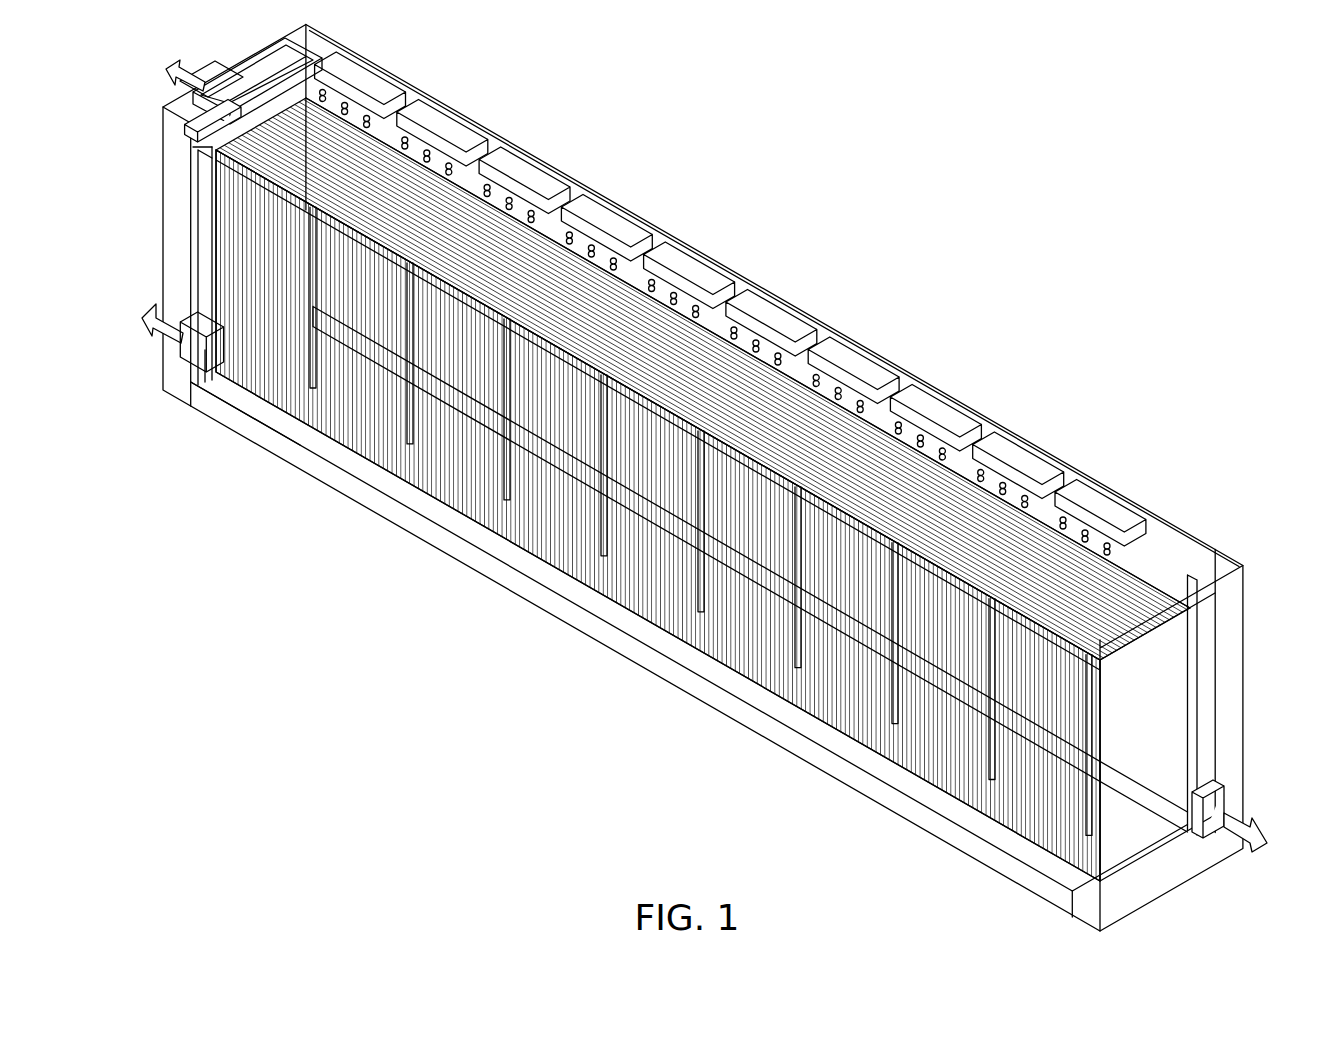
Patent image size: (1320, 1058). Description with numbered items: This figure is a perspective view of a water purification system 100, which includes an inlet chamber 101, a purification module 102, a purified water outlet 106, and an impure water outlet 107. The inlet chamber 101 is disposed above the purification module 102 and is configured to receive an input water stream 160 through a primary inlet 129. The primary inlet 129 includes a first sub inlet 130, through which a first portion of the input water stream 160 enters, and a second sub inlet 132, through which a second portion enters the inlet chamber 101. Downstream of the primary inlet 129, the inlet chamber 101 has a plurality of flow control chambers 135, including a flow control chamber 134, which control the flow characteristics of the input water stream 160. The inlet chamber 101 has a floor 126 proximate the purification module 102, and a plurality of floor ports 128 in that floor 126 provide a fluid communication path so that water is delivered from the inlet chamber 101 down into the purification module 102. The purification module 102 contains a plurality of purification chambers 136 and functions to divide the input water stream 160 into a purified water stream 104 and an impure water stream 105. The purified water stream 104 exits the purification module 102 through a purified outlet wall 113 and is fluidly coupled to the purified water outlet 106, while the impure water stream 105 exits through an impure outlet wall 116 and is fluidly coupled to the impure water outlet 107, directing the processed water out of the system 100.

The water purification system 100 is at (701, 471).
The inlet chamber 101 is at (404, 74).
The purification module 102 is at (363, 402).
The purified water stream 104 is at (150, 310).
The impure water stream 105 is at (1262, 826).
The purified water outlet 106 is at (205, 362).
The impure water outlet 107 is at (1226, 792).
The purified outlet wall 113 is at (200, 185).
The impure outlet wall 116 is at (1205, 612).
The floor 126 is at (497, 176).
The floor ports 128 is at (539, 182).
The primary inlet 129 is at (222, 66).
The first sub inlet 130 is at (268, 62).
The second sub inlet 132 is at (200, 91).
The flow control chamber 134 is at (344, 64).
The plurality of flow control chambers 135 is at (466, 122).
The plurality of purification chambers 136 is at (200, 258).
The input water stream 160 is at (174, 66).